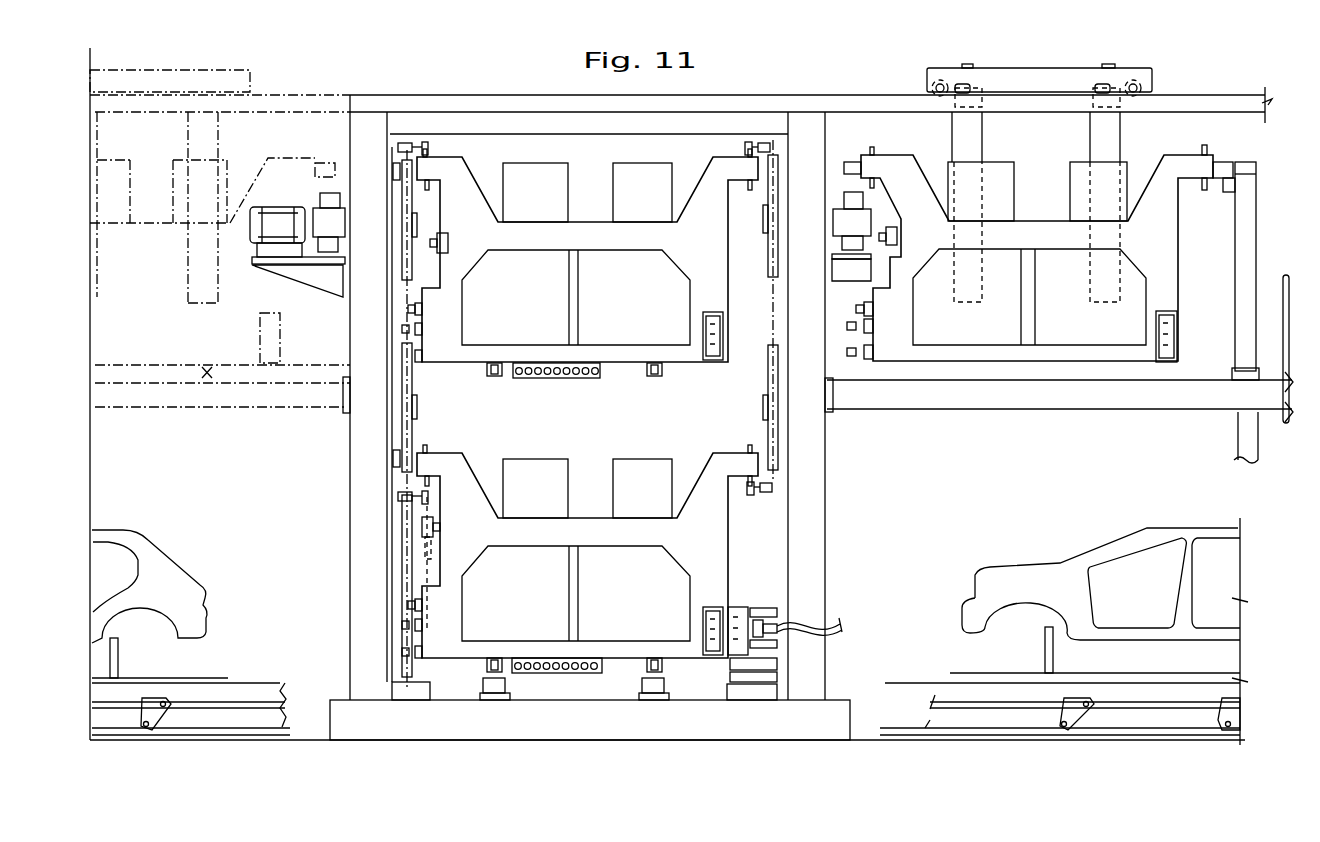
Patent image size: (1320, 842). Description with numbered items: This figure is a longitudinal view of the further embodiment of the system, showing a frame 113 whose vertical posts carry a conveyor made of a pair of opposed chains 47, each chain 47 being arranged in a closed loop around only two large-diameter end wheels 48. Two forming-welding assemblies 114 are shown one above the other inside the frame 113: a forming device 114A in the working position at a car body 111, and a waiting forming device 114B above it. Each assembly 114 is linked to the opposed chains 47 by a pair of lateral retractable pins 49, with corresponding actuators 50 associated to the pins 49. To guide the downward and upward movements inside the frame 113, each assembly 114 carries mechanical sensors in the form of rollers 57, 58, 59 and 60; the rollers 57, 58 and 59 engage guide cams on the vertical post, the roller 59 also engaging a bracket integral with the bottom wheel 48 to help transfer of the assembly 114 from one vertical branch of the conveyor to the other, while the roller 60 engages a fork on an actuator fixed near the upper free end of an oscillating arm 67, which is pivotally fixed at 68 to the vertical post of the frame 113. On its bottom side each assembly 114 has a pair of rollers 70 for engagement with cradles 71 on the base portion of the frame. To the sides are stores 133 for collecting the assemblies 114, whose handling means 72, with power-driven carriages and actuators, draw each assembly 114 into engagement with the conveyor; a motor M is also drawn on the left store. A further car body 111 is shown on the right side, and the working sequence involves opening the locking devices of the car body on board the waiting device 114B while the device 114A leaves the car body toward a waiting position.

The store 133 is at (315, 88).
The handling means 72 is at (1011, 60).
The frame 113 is at (836, 513).
The forming-welding assembly 114 is at (1039, 219).
The forming device in working position 114A is at (590, 515).
The waiting forming device 114B is at (587, 223).
The car body 111 is at (182, 583).
The chain 47 is at (400, 326).
The end wheel 48 is at (403, 200).
The retractable pin 49 is at (423, 188).
The actuator 50 is at (412, 141).
The roller 57 is at (420, 362).
The roller 58 is at (408, 327).
The roller 59 is at (410, 307).
The roller 60 is at (448, 244).
The oscillating arm 67 is at (427, 625).
The pivot 68 is at (410, 700).
The roller 70 is at (495, 378).
The cradle 71 is at (502, 692).
The motor M is at (243, 239).